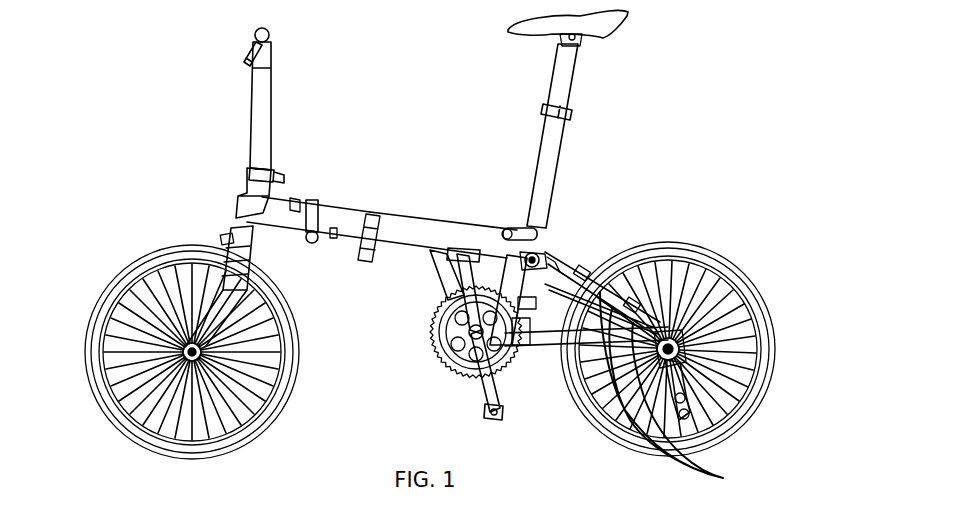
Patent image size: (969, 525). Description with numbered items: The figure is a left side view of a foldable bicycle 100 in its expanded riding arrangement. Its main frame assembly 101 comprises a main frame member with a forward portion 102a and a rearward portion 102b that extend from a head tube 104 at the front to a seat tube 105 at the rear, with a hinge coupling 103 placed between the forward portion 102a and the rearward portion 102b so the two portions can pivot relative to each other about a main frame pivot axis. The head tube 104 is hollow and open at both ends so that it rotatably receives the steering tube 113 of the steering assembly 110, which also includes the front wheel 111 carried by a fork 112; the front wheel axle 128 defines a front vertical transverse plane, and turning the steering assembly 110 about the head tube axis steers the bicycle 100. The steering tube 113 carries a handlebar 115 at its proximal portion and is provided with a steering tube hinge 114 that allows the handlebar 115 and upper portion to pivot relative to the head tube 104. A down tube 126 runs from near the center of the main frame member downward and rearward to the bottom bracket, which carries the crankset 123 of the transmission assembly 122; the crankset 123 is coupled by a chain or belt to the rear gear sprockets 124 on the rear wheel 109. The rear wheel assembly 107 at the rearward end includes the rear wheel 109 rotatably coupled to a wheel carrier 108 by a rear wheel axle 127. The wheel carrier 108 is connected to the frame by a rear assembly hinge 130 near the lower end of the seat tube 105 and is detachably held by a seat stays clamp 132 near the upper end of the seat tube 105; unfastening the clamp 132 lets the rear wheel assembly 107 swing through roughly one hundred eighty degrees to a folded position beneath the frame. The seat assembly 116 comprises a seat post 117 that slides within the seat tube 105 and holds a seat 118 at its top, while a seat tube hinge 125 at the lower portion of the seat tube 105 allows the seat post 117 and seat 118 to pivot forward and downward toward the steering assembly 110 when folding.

The bicycle 100 is at (158, 76).
The main frame assembly 101 is at (400, 100).
The forward portion 102a is at (298, 198).
The rearward portion 102b is at (398, 220).
The hinge coupling 103 is at (315, 205).
The head tube 104 is at (240, 204).
The seat tube 105 is at (510, 258).
The rear wheel assembly 107 is at (687, 184).
The wheel carrier 108 is at (710, 478).
The rear wheel 109 is at (697, 246).
The steering assembly 110 is at (120, 140).
The front wheel 111 is at (113, 258).
The fork 112 is at (228, 238).
The steering tube 113 is at (253, 122).
The steering tube hinge 114 is at (248, 175).
The handlebar 115 is at (252, 40).
The seat assembly 116 is at (733, 87).
The seat post 117 is at (578, 80).
The seat 118 is at (628, 16).
The transmission assembly 122 is at (410, 397).
The crankset 123 is at (432, 350).
The rear gear sprockets 124 is at (687, 353).
The seat tube hinge 125 is at (515, 232).
The down tube 126 is at (430, 290).
The rear wheel axle 127 is at (668, 340).
The front wheel axle 128 is at (207, 347).
The rear assembly hinge 130 is at (517, 345).
The seat stays clamp 132 is at (542, 258).